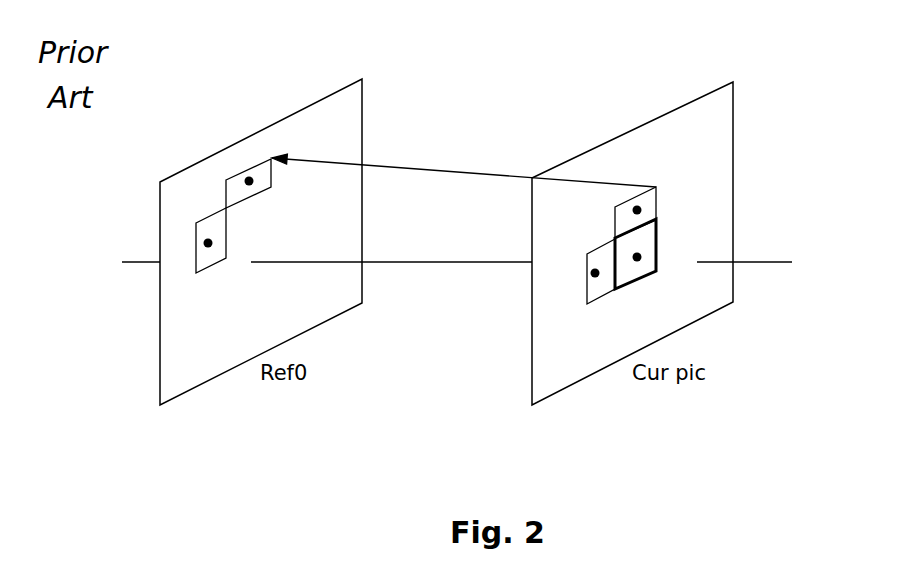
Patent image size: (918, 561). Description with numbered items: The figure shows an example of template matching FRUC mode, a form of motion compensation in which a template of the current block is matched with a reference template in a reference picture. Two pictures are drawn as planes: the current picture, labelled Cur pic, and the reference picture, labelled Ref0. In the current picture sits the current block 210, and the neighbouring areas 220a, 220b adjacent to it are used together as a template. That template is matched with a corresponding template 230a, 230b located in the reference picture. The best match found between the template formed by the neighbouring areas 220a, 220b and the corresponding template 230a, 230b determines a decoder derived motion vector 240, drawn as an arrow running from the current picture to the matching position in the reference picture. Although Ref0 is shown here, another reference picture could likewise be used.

The current block 210 is at (637, 257).
The neighbouring area 220a is at (637, 210).
The neighbouring area 220b is at (595, 273).
The corresponding template 230a is at (249, 181).
The corresponding template 230b is at (208, 243).
The decoder derived motion vector 240 is at (489, 172).